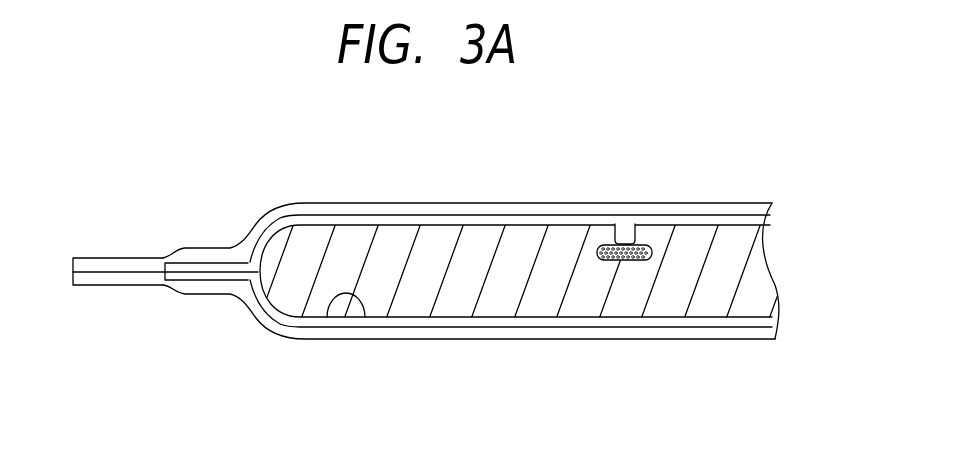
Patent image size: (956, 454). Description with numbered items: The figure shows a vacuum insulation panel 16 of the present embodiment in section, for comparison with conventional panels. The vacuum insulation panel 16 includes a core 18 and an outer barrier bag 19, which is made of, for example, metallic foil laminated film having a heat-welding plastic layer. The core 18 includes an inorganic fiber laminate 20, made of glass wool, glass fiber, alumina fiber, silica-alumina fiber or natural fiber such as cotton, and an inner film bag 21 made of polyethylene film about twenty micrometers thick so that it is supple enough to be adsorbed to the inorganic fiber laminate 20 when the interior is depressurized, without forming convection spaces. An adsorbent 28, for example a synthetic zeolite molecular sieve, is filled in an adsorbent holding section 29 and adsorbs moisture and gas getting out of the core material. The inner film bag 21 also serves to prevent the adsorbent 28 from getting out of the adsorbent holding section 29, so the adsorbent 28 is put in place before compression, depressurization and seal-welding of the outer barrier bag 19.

The vacuum insulation panel 16 is at (437, 179).
The core 18 is at (791, 253).
The outer barrier bag 19 is at (312, 208).
The inorganic fiber laminate 20 is at (543, 303).
The inner film bag 21 is at (365, 317).
The adsorbent 28 is at (648, 244).
The adsorbent holding section 29 is at (598, 252).